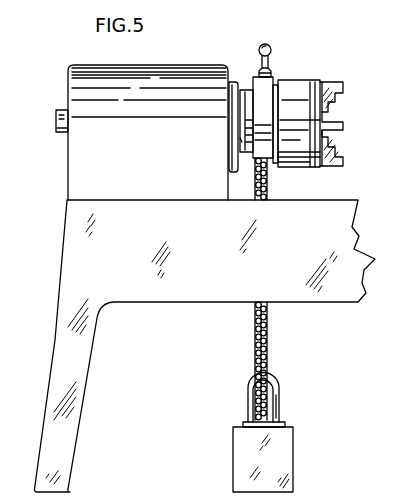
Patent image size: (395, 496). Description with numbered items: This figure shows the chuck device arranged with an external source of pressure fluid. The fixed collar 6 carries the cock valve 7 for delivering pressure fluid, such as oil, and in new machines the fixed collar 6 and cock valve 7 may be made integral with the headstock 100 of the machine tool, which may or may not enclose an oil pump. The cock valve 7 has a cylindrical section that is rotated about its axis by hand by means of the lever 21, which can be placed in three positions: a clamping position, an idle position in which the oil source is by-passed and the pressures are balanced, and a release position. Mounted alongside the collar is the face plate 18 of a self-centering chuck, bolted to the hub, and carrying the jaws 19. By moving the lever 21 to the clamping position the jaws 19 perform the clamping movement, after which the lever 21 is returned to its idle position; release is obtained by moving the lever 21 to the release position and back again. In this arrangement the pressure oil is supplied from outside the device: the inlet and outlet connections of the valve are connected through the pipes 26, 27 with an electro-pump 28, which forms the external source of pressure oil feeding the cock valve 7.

The headstock 100 is at (93, 93).
The fixed collar 6 is at (265, 92).
The cock valve 7 is at (268, 72).
The lever 21 is at (270, 47).
The jaws 19 is at (329, 88).
The face plate 18 is at (313, 163).
The pipe 26 is at (268, 344).
The pipe 27 is at (254, 331).
The electro-pump 28 is at (275, 447).